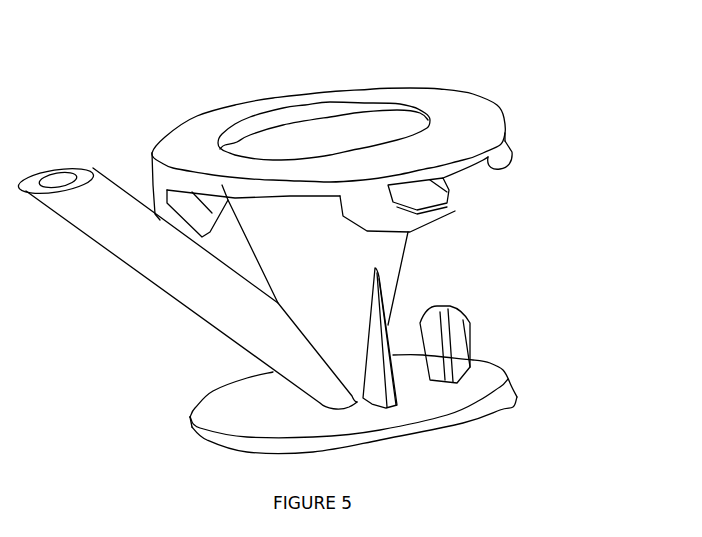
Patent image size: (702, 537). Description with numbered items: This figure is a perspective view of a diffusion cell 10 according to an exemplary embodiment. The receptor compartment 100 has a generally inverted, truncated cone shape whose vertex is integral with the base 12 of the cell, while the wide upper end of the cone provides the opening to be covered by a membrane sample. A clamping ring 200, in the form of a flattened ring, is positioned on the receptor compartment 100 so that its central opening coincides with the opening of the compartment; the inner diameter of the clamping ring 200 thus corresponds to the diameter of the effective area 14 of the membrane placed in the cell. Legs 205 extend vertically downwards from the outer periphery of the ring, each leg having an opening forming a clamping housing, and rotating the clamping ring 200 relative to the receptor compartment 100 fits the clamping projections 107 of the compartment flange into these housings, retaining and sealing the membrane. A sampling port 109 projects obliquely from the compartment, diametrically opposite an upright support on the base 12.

The diffusion cell 10 is at (597, 271).
The base 12 is at (502, 374).
The effective area 14 is at (340, 125).
The receptor compartment 100 is at (422, 258).
The clamping projection 107 is at (456, 186).
The sampling port 109 is at (169, 273).
The clamping ring 200 is at (492, 85).
The leg 205 is at (465, 210).